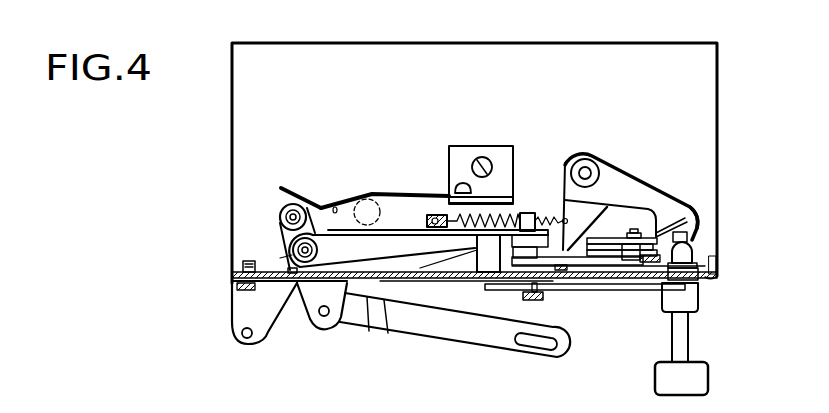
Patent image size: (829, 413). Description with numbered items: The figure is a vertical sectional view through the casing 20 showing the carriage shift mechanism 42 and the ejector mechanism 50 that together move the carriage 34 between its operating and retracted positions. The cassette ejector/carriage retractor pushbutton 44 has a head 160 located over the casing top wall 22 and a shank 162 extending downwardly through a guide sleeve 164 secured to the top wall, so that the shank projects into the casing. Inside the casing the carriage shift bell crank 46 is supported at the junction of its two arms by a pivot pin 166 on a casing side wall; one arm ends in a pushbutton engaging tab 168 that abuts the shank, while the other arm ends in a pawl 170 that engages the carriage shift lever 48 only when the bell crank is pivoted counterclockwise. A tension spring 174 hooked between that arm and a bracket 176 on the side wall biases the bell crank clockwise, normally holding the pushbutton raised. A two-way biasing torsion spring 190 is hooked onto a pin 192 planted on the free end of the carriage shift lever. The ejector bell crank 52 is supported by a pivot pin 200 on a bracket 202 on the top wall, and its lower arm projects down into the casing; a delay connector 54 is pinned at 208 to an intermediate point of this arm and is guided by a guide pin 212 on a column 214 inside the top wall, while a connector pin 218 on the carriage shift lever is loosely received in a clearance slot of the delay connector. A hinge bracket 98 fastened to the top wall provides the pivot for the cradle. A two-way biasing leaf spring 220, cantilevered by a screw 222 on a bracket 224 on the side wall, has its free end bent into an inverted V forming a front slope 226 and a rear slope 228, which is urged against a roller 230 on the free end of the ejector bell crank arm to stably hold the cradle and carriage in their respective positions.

The casing 20 is at (724, 96).
The casing top wall 22 is at (718, 277).
The carriage 34 is at (588, 291).
The carriage shift mechanism 42 is at (656, 184).
The cassette ejector/carriage retractor pushbutton 44 is at (716, 384).
The carriage shift bell crank 46 is at (693, 207).
The carriage shift lever 48 is at (605, 266).
The ejector mechanism 50 is at (365, 336).
The ejector bell crank 52 is at (483, 340).
The delay connector 54 is at (412, 242).
The hinge bracket 98 is at (240, 306).
The head 160 is at (687, 345).
The shank 162 is at (690, 253).
The guide sleeve 164 is at (692, 297).
The pivot pin 166 is at (585, 168).
The pushbutton engaging tab 168 is at (700, 222).
The pawl 170 is at (554, 291).
The tension spring 174 is at (563, 220).
The bracket 176 is at (435, 214).
The two-way biasing torsion spring 190 is at (605, 237).
The pin 192 is at (642, 262).
The pivot pin 200 is at (324, 317).
The bracket 202 is at (310, 300).
The pivot pin 208 is at (300, 250).
The guide pin 212 is at (455, 262).
The column 214 is at (490, 258).
The connector pin 218 is at (527, 213).
The two-way biasing leaf spring 220 is at (403, 190).
The screw 222 is at (463, 184).
The bracket 224 is at (498, 195).
The front slope 226 is at (281, 201).
The rear slope 228 is at (335, 200).
The roller 230 is at (282, 218).